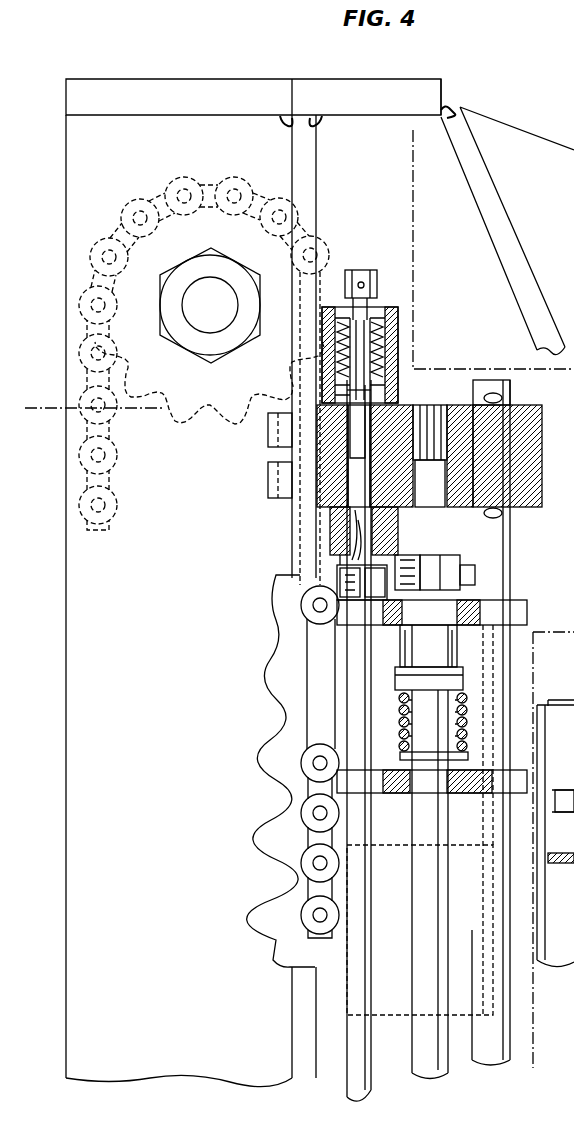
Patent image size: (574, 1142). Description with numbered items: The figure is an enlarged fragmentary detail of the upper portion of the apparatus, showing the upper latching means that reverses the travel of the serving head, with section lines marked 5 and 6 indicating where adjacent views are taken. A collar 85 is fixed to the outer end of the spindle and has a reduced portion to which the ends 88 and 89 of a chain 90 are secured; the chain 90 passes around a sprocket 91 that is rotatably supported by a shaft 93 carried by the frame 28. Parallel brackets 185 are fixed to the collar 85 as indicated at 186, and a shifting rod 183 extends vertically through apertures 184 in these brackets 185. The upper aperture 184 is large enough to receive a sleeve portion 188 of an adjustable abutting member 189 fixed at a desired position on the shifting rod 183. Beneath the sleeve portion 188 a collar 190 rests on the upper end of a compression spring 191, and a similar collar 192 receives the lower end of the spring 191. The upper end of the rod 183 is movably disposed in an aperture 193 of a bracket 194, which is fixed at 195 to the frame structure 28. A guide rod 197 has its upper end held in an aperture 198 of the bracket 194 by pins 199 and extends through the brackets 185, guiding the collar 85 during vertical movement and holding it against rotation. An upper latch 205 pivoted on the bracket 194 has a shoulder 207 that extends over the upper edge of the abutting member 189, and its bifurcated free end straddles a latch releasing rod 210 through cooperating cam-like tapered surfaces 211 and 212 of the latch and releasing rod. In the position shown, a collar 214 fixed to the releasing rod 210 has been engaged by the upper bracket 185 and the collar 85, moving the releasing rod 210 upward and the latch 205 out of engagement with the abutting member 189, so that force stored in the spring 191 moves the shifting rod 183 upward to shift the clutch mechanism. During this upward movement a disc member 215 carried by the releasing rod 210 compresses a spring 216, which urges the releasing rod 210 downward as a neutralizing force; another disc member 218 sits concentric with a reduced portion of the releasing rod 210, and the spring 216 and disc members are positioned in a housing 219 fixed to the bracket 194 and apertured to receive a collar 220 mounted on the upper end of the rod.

The frame 28 is at (400, 95).
The section line 5 is at (538, 1040).
The section line 6 is at (38, 405).
The shaft 93 is at (200, 285).
The sprocket 91 is at (205, 422).
The chain 90 is at (112, 506).
The end of chain 89 is at (312, 612).
The end of chain 88 is at (312, 762).
The collar 85 is at (312, 688).
The fixing of bracket 195 is at (270, 478).
The collar 220 is at (368, 270).
The disc member 218 is at (375, 306).
The housing 219 is at (400, 310).
The spring 216 is at (395, 345).
The disc member 215 is at (380, 392).
The latch releasing rod 210 is at (378, 395).
The aperture 193 is at (445, 406).
The aperture 198 is at (470, 452).
The bracket 194 is at (538, 480).
The pins 199 is at (505, 514).
The guide rod 197 is at (512, 566).
The upper latch 205 is at (330, 536).
The tapered surface 211 is at (338, 548).
The tapered surface 212 is at (362, 540).
The collar 214 is at (340, 575).
The shoulder 207 is at (405, 556).
The adjustable abutting member 189 is at (450, 556).
The brackets 185 is at (472, 795).
The fixing of brackets 186 is at (448, 630).
The sleeve portion 188 is at (400, 640).
The collar 190 is at (402, 662).
The apertures 184 is at (440, 795).
The compression spring 191 is at (400, 722).
The collar 192 is at (400, 755).
The shifting rod 183 is at (420, 967).